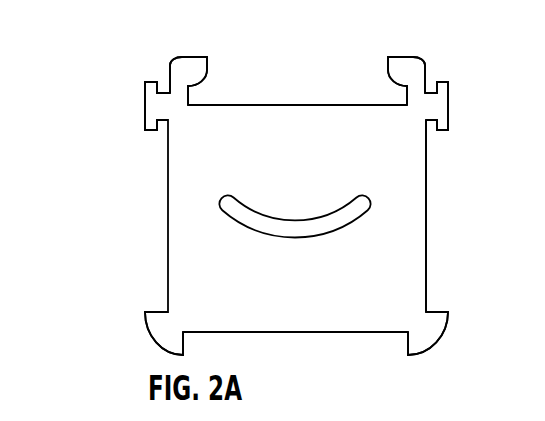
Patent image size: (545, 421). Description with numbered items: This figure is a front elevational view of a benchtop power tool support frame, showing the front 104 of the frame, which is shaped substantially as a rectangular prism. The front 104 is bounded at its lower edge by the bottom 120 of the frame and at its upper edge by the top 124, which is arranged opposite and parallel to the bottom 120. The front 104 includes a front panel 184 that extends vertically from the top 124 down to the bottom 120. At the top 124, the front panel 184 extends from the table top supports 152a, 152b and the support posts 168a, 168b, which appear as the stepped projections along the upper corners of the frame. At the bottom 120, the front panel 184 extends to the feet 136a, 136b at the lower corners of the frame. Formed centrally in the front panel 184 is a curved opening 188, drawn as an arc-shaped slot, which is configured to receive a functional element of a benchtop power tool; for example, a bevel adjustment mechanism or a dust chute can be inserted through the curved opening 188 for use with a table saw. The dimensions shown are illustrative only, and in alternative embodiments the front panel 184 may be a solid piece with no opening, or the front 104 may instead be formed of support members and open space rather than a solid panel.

The front 104 is at (138, 213).
The bottom 120 is at (319, 350).
The top 124 is at (321, 88).
The foot 136a is at (161, 326).
The foot 136b is at (424, 335).
The table top support 152a is at (182, 72).
The table top support 152b is at (412, 67).
The support post 168a is at (155, 103).
The support post 168b is at (435, 103).
The front panel 184 is at (410, 180).
The curved opening 188 is at (355, 218).